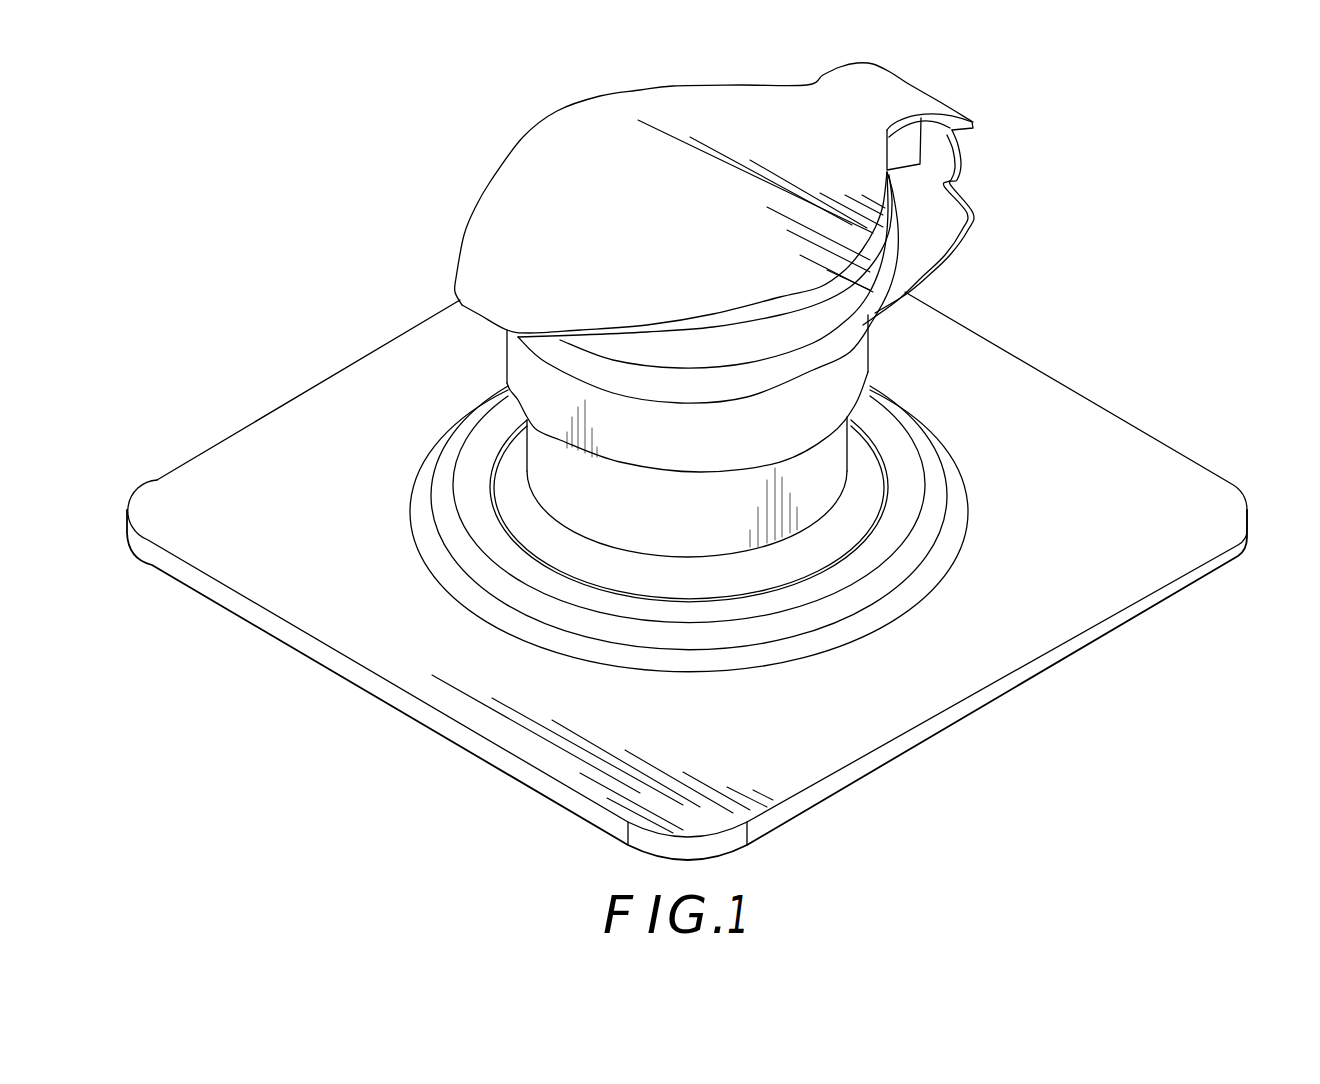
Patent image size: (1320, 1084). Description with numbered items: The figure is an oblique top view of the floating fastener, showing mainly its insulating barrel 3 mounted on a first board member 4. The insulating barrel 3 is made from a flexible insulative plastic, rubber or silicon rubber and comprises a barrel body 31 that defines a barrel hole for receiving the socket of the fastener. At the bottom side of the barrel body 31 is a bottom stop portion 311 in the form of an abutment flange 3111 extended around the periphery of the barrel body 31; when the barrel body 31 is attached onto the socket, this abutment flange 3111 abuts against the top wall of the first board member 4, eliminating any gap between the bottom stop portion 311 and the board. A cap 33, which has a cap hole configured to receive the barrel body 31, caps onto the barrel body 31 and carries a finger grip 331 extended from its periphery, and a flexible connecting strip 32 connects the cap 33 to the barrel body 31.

The insulating barrel 3 is at (719, 310).
The first board member 4 is at (1222, 530).
The barrel body 31 is at (536, 424).
The bottom stop portion 311 is at (551, 552).
The abutment flange 3111 is at (567, 557).
The flexible connecting strip 32 is at (940, 158).
The cap 33 is at (853, 360).
The finger grip 331 is at (488, 267).